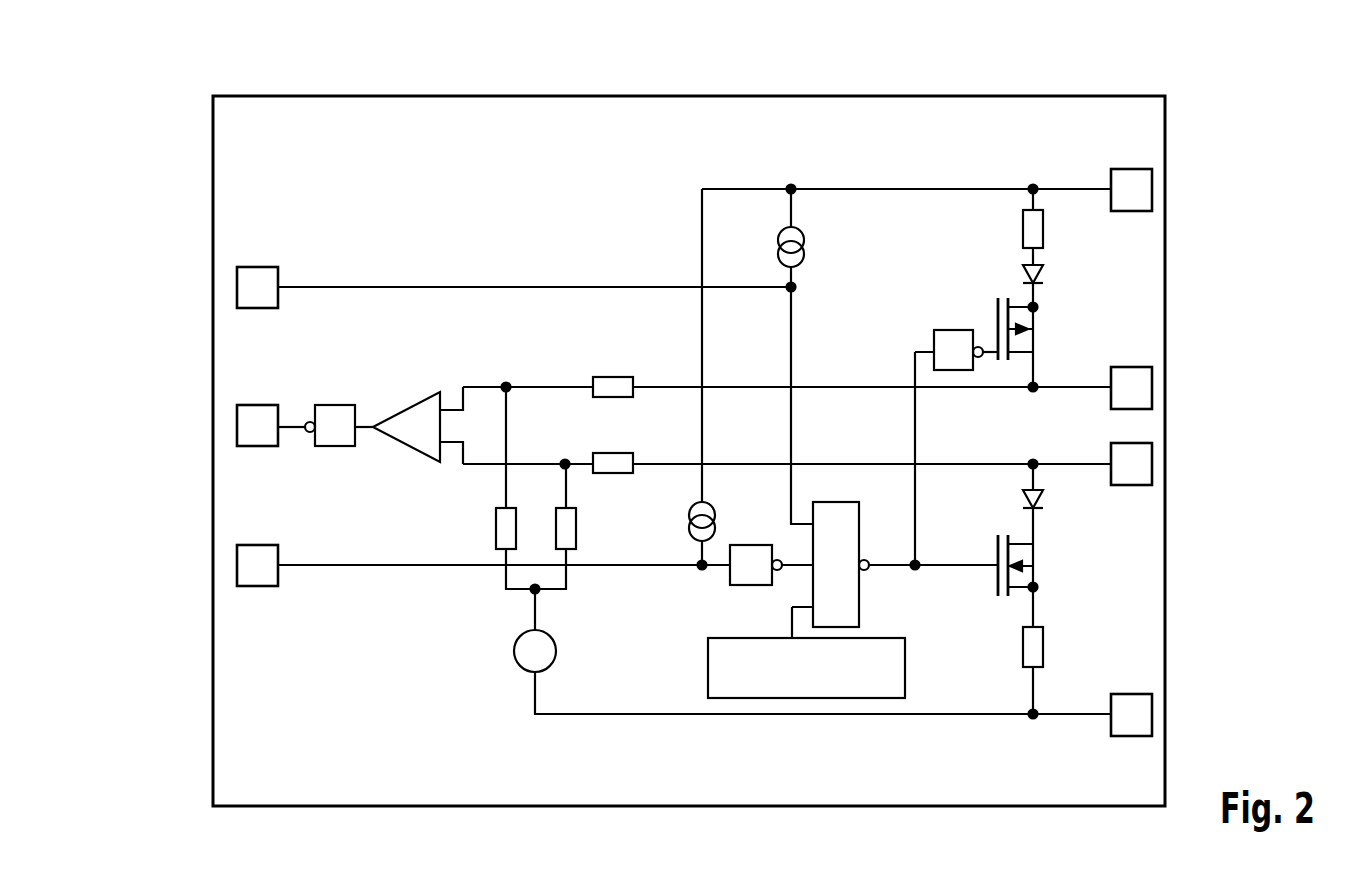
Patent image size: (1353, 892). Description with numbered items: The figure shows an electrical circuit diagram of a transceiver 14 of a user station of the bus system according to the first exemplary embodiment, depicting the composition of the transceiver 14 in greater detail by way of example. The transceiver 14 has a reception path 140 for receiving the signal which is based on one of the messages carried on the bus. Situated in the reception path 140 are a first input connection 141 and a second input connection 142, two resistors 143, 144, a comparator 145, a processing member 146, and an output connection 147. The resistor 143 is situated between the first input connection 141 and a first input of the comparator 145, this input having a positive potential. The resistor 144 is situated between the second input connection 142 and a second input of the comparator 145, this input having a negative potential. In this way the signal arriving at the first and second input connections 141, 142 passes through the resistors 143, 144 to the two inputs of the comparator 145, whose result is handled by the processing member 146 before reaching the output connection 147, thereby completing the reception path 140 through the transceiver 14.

The transceiver 14 is at (932, 96).
The reception path 140 is at (178, 385).
The first input connection 141 is at (1152, 387).
The second input connection 142 is at (1152, 464).
The resistor 143 is at (613, 377).
The resistor 144 is at (613, 473).
The comparator 145 is at (410, 403).
The processing member 146 is at (335, 405).
The output connection 147 is at (236, 427).